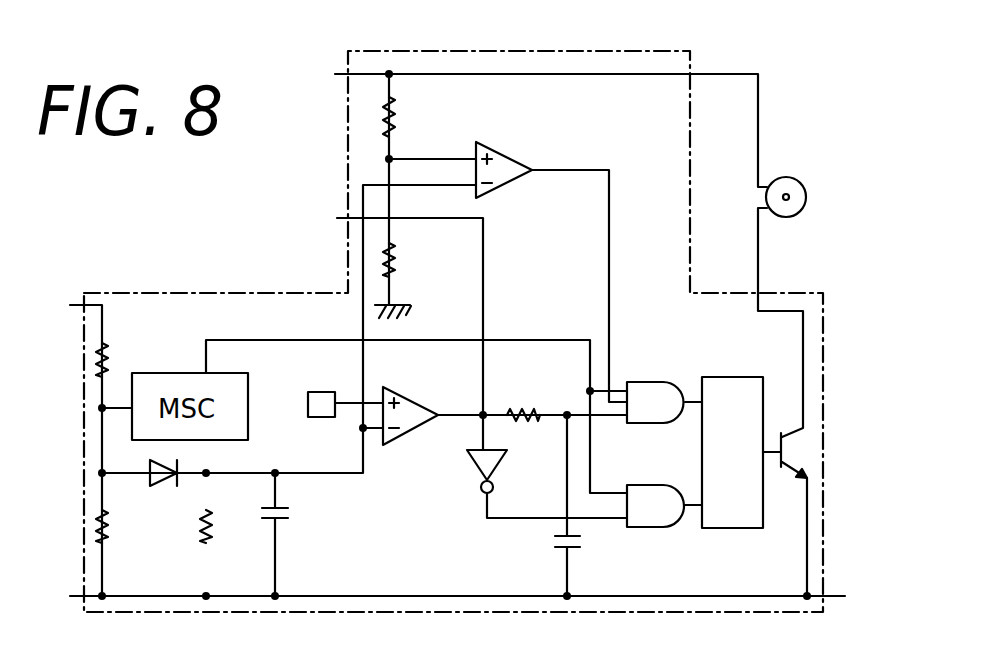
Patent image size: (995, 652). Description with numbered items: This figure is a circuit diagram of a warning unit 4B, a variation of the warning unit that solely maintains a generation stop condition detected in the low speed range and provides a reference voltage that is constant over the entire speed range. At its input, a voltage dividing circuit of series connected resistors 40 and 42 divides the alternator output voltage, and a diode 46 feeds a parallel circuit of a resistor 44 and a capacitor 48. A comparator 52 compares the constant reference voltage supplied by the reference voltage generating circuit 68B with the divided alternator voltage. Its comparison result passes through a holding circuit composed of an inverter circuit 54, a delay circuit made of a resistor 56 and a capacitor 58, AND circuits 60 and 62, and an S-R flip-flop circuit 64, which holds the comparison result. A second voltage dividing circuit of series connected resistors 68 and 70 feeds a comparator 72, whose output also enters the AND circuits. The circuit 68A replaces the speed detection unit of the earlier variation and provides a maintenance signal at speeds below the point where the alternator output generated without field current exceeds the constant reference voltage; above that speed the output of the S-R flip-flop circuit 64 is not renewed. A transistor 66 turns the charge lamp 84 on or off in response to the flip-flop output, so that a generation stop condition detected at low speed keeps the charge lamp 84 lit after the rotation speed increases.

The warning unit 4B is at (690, 58).
The resistor 40 is at (110, 358).
The resistor 42 is at (106, 522).
The resistor 44 is at (216, 520).
The diode 46 is at (165, 490).
The capacitor 48 is at (290, 515).
The comparator 52 is at (410, 393).
The inverter circuit 54 is at (472, 462).
The resistor 56 is at (525, 400).
The capacitor 58 is at (550, 537).
The AND circuit 60 is at (652, 380).
The AND circuit 62 is at (642, 528).
The S-R flip-flop circuit 64 is at (733, 375).
The transistor 66 is at (790, 478).
The resistor 68 is at (402, 115).
The circuit for providing the maintenance signal 68A is at (174, 372).
The reference voltage generating circuit 68B is at (300, 408).
The resistor 70 is at (402, 248).
The comparator 72 is at (513, 152).
The charge lamp 84 is at (786, 217).